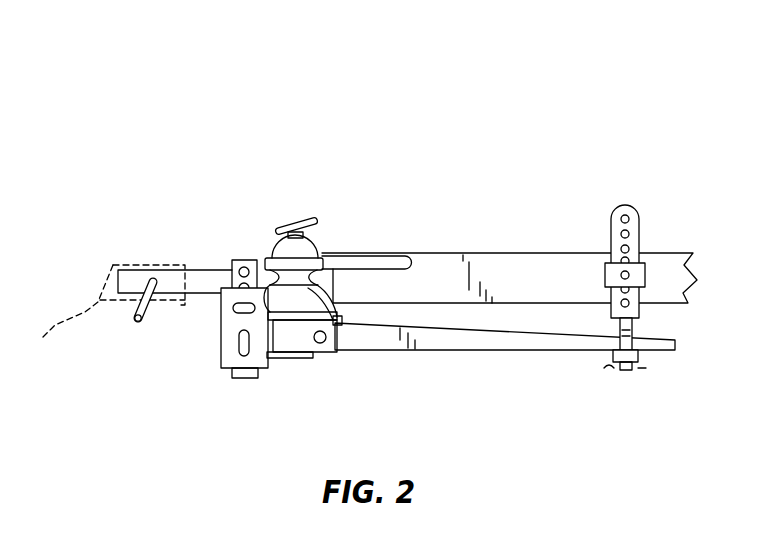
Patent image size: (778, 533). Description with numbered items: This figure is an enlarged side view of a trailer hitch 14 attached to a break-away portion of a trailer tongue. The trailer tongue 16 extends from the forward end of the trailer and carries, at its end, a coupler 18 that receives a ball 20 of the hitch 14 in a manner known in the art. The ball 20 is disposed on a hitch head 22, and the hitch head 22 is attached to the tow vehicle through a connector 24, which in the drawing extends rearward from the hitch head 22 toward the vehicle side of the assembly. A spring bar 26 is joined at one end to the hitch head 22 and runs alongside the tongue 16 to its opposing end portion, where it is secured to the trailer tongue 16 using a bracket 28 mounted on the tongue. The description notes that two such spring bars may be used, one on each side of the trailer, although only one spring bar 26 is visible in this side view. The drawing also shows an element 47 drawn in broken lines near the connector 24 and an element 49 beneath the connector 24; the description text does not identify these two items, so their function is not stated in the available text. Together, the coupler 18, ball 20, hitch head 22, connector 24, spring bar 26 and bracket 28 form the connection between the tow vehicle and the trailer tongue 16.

The hitch 14 is at (488, 115).
The tongue 16 is at (668, 254).
The coupler 18 is at (295, 231).
The ball 20 is at (308, 279).
The hitch head 22 is at (337, 323).
The connector 24 is at (205, 280).
The spring bar 26 is at (542, 350).
The bracket 28 is at (636, 220).
The receiver 47 is at (104, 315).
The hitch pin 49 is at (139, 322).